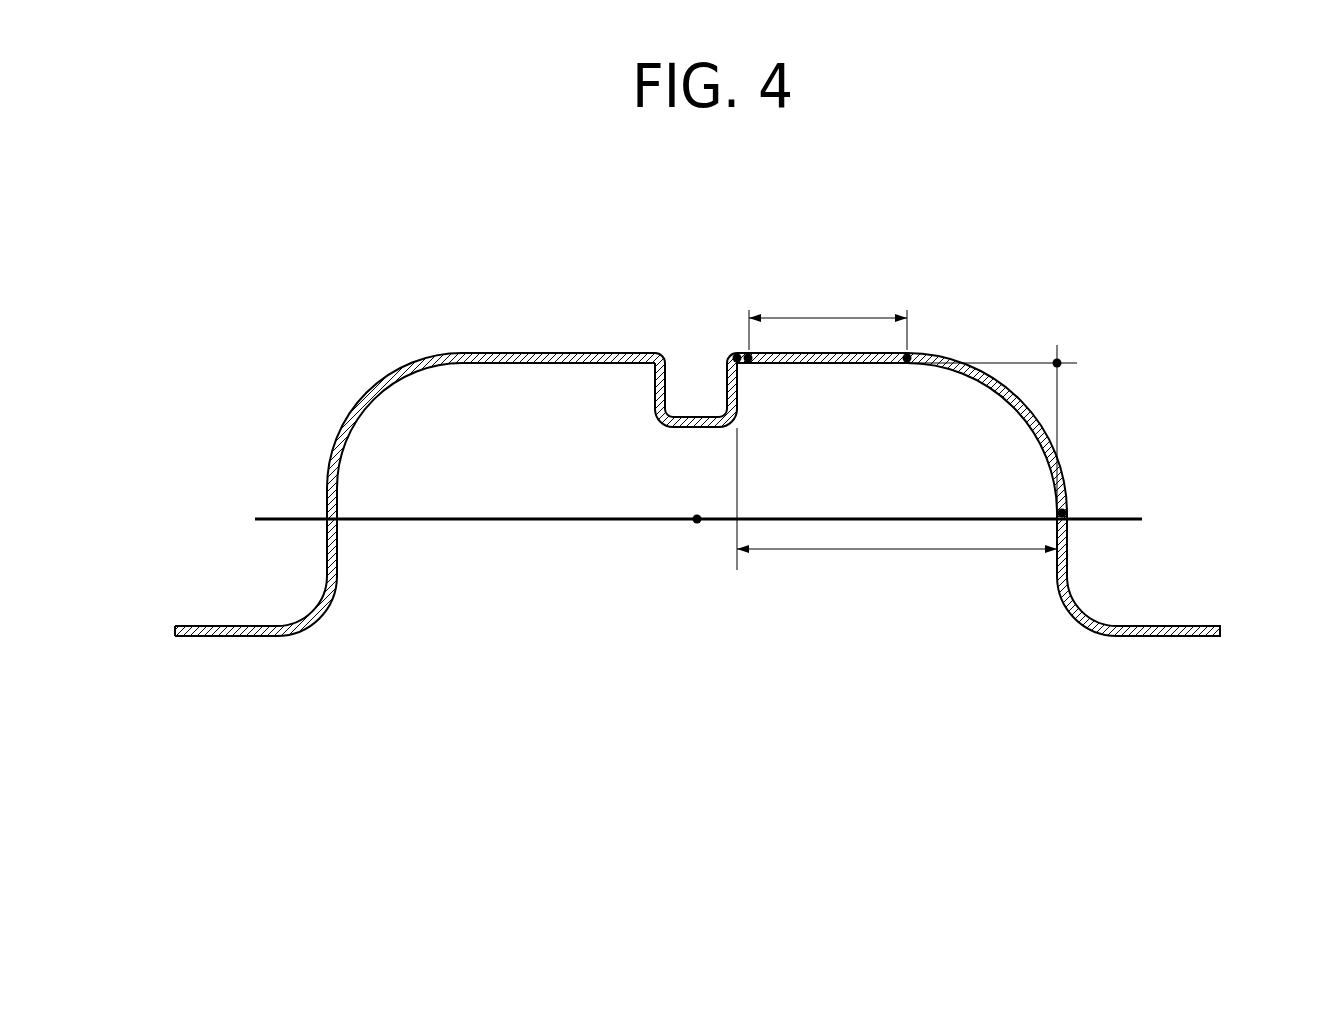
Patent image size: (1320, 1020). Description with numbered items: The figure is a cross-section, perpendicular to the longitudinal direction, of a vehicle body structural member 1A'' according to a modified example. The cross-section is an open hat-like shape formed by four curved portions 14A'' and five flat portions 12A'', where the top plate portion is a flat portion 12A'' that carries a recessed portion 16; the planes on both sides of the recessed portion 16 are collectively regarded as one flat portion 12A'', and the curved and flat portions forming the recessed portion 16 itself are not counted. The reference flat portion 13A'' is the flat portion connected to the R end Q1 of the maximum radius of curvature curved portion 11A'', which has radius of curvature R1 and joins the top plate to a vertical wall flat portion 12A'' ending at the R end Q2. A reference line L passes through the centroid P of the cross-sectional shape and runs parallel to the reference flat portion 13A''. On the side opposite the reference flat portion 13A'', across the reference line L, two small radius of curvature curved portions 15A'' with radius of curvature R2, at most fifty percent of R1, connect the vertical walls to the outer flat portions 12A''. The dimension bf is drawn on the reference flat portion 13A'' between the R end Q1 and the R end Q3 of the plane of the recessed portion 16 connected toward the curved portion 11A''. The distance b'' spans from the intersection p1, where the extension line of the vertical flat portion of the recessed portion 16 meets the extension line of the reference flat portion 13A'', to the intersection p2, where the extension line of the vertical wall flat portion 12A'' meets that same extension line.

The vehicle body structural member 1A'' is at (694, 457).
The flat portion 12A'' is at (695, 585).
The reference flat portion 13A'' is at (718, 386).
The curved portion 14A'' is at (350, 420).
The maximum radius of curvature curved portion 11A'' is at (1087, 433).
The small radius of curvature curved portion 15A'' is at (697, 611).
The recessed portion 16 is at (693, 384).
The radius of curvature of the maximum radius of curvature curved portion R1 is at (1020, 406).
The radius of curvature of the small radius of curvature curved portion R2 is at (313, 613).
The reference line L is at (684, 521).
The centroid P is at (697, 514).
The R end Q1 is at (913, 353).
The R end Q2 is at (1067, 511).
The R end Q3 is at (736, 355).
The intersection p1 is at (745, 357).
The intersection p2 is at (1062, 359).
The width of reference flat portion bf is at (828, 313).
The distance b'' is at (897, 508).